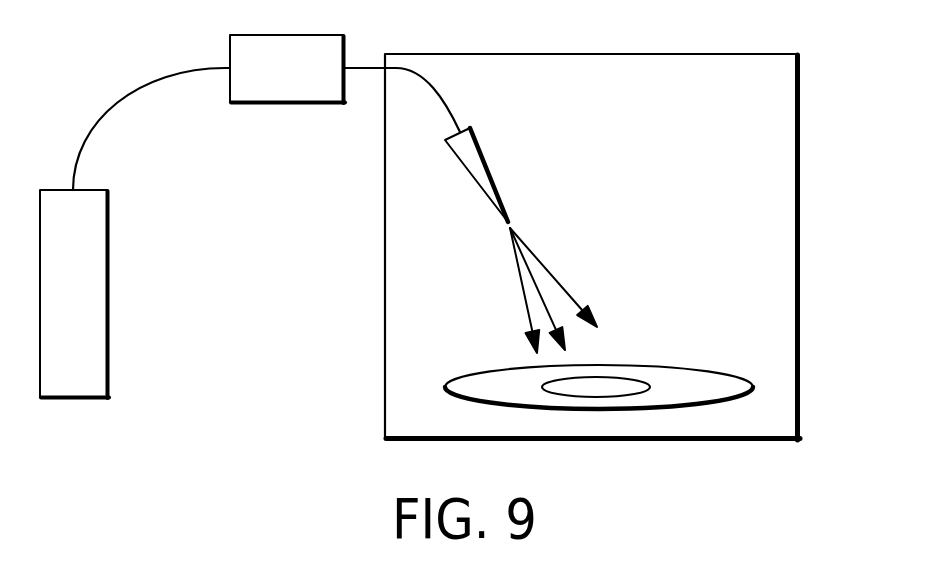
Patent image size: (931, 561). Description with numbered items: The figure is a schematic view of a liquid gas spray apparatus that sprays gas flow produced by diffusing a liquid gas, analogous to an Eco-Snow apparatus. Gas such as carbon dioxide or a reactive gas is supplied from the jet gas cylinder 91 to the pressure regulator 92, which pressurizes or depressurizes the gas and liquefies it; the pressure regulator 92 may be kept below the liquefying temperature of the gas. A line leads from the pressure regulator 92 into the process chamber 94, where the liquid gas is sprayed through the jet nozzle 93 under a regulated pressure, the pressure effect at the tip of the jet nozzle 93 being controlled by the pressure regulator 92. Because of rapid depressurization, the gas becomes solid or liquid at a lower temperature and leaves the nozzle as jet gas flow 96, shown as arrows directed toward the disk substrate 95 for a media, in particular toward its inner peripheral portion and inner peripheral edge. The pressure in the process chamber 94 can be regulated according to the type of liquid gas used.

The jet gas cylinder 91 is at (108, 333).
The pressure regulator 92 is at (285, 104).
The jet nozzle 93 is at (482, 141).
The process chamber 94 is at (800, 332).
The disk substrate 95 is at (693, 380).
The jet gas flow 96 is at (548, 208).